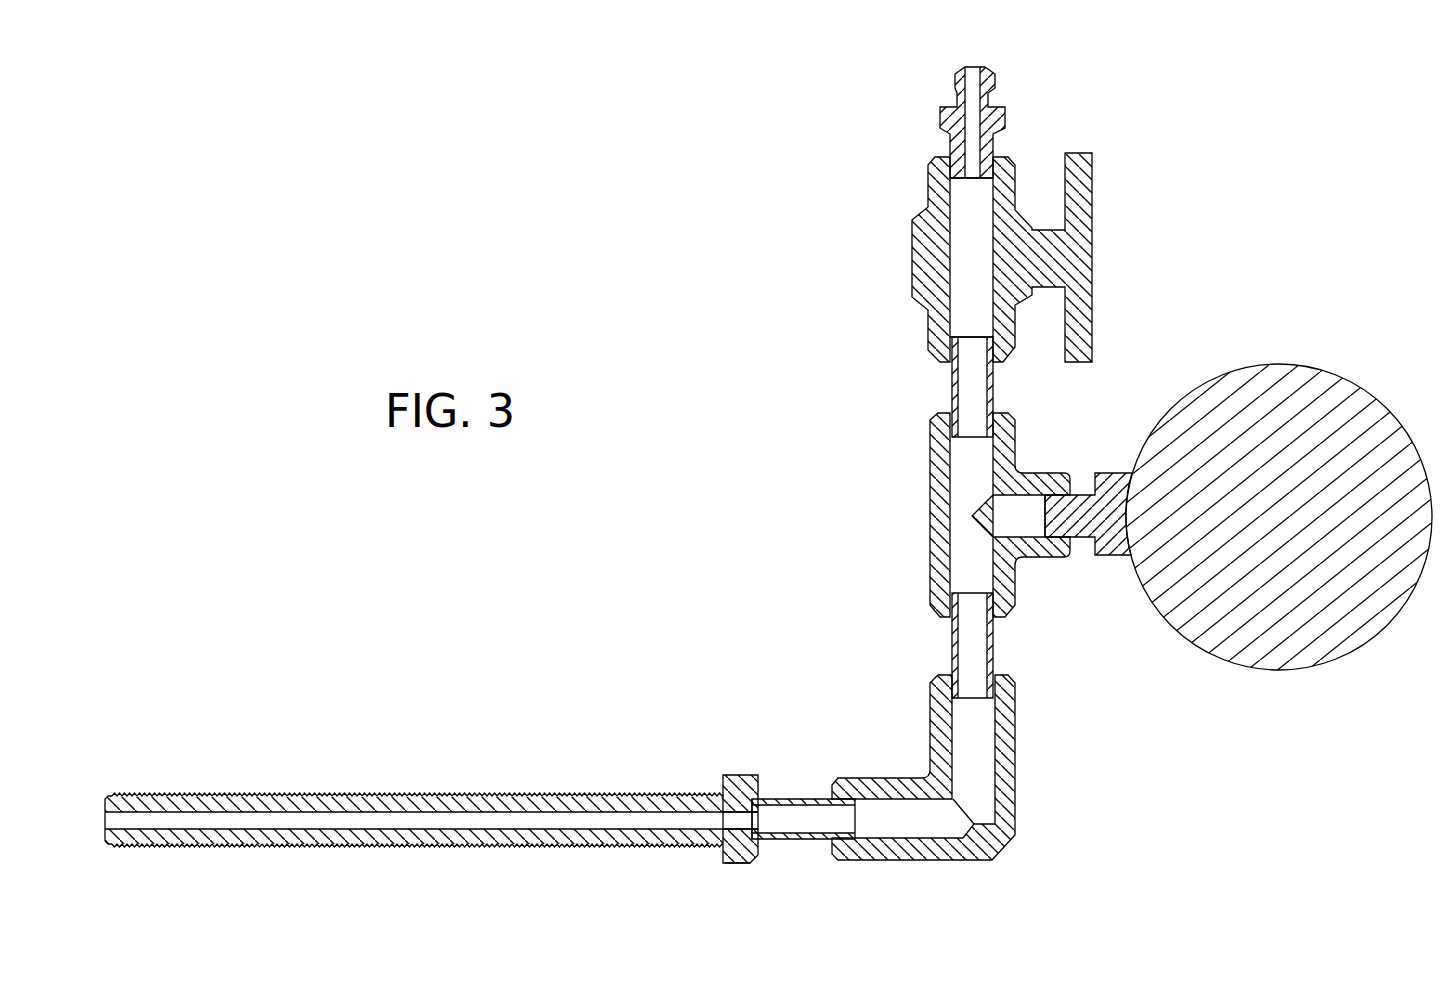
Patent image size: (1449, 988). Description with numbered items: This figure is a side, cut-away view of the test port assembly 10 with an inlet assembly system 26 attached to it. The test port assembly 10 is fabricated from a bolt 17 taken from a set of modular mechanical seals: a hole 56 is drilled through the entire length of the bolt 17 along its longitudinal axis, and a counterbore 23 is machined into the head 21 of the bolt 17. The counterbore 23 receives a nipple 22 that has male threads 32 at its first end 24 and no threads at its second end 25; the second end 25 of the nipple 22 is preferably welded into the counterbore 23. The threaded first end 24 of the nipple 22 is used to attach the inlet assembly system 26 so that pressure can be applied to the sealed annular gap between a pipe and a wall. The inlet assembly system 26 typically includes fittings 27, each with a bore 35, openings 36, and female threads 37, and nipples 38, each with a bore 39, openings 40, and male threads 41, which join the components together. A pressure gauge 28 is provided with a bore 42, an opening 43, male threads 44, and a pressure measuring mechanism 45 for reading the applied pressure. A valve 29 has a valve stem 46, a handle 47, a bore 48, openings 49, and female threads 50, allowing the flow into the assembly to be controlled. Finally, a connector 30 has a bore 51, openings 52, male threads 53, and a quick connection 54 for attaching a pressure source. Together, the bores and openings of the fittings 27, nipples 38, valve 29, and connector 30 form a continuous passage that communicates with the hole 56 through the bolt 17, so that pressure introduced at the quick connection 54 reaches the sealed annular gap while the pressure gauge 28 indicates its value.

The test port assembly 10 is at (452, 738).
The bolt 17 is at (247, 795).
The head 21 is at (731, 775).
The nipple 22 is at (800, 840).
The counterbore 23 is at (758, 796).
The first end 24 is at (700, 897).
The male threads 32 is at (746, 863).
The second end 25 is at (858, 825).
The inlet assembly system 26 is at (1234, 188).
The fittings 27 is at (929, 497).
The pressure gauge 28 is at (1290, 362).
The valve 29 is at (1093, 246).
The connector 30 is at (1006, 113).
The bore 35 is at (1005, 500).
The openings 36 is at (998, 412).
The female threads 37 is at (930, 426).
The nipples 38 is at (951, 372).
The bore 39 is at (975, 380).
The openings 40 is at (972, 440).
The male threads 41 is at (950, 337).
The bore 42 is at (1130, 468).
The opening 43 is at (1043, 520).
The male threads 44 is at (1048, 544).
The pressure measuring mechanism 45 is at (1272, 638).
The valve stem 46 is at (1044, 228).
The handle 47 is at (1078, 190).
The bore 48 is at (936, 205).
The openings 49 is at (971, 257).
The female threads 50 is at (929, 236).
The male threads 53 is at (937, 162).
The bore 51 is at (985, 80).
The openings 52 is at (968, 64).
The quick connection 54 is at (950, 85).
The hole 56 is at (338, 830).